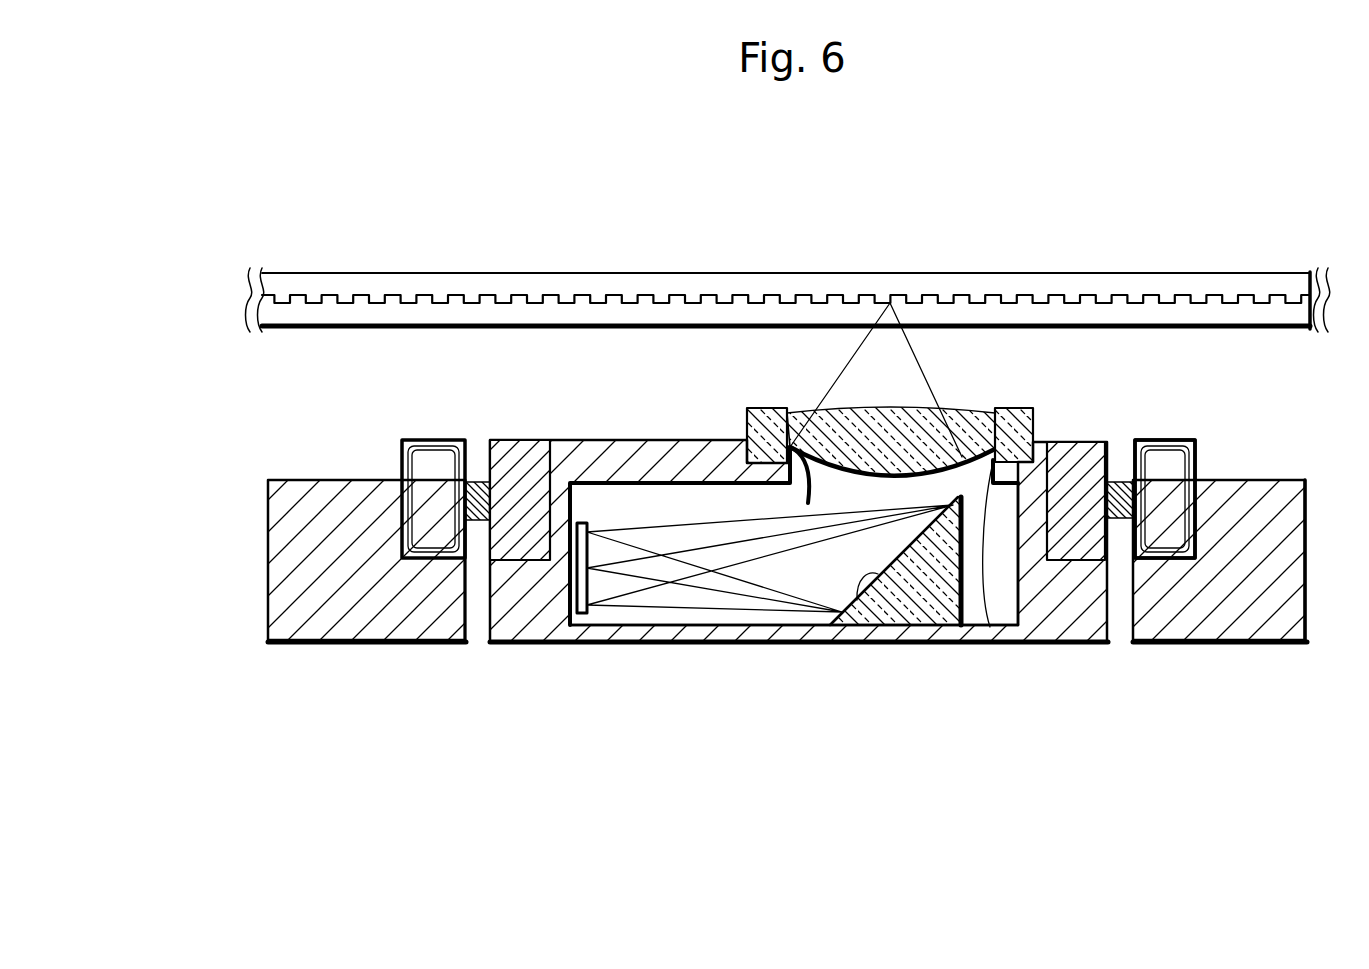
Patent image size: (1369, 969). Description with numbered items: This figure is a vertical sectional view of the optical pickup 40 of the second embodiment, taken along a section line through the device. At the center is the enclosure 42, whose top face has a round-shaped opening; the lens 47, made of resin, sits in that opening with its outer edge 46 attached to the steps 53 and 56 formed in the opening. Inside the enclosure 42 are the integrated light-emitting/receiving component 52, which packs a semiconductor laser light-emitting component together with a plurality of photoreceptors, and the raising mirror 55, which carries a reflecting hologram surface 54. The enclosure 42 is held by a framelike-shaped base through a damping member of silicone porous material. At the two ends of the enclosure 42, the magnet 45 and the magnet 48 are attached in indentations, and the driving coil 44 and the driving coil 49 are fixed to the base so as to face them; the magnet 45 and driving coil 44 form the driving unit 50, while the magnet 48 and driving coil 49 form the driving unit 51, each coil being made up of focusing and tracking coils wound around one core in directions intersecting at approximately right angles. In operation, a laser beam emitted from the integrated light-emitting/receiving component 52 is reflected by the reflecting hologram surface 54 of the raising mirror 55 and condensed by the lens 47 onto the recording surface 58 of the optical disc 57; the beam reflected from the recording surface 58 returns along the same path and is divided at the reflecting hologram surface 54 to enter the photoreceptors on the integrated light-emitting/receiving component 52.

The optical pickup 40 is at (752, 756).
The enclosure 42 is at (1057, 613).
The driving coil 44 is at (375, 438).
The magnet 45 is at (540, 478).
The outer edge 46 is at (772, 433).
The lens 47 is at (883, 435).
The magnet 48 is at (1068, 488).
The driving coil 49 is at (1205, 462).
The driving unit 50 is at (550, 434).
The driving unit 51 is at (1200, 434).
The integrated light-emitting/receiving component 52 is at (584, 614).
The step 53 is at (806, 503).
The reflecting hologram surface 54 is at (857, 600).
The raising mirror 55 is at (912, 598).
The step 56 is at (990, 627).
The optical disc 57 is at (677, 253).
The recording surface 58 is at (1262, 300).